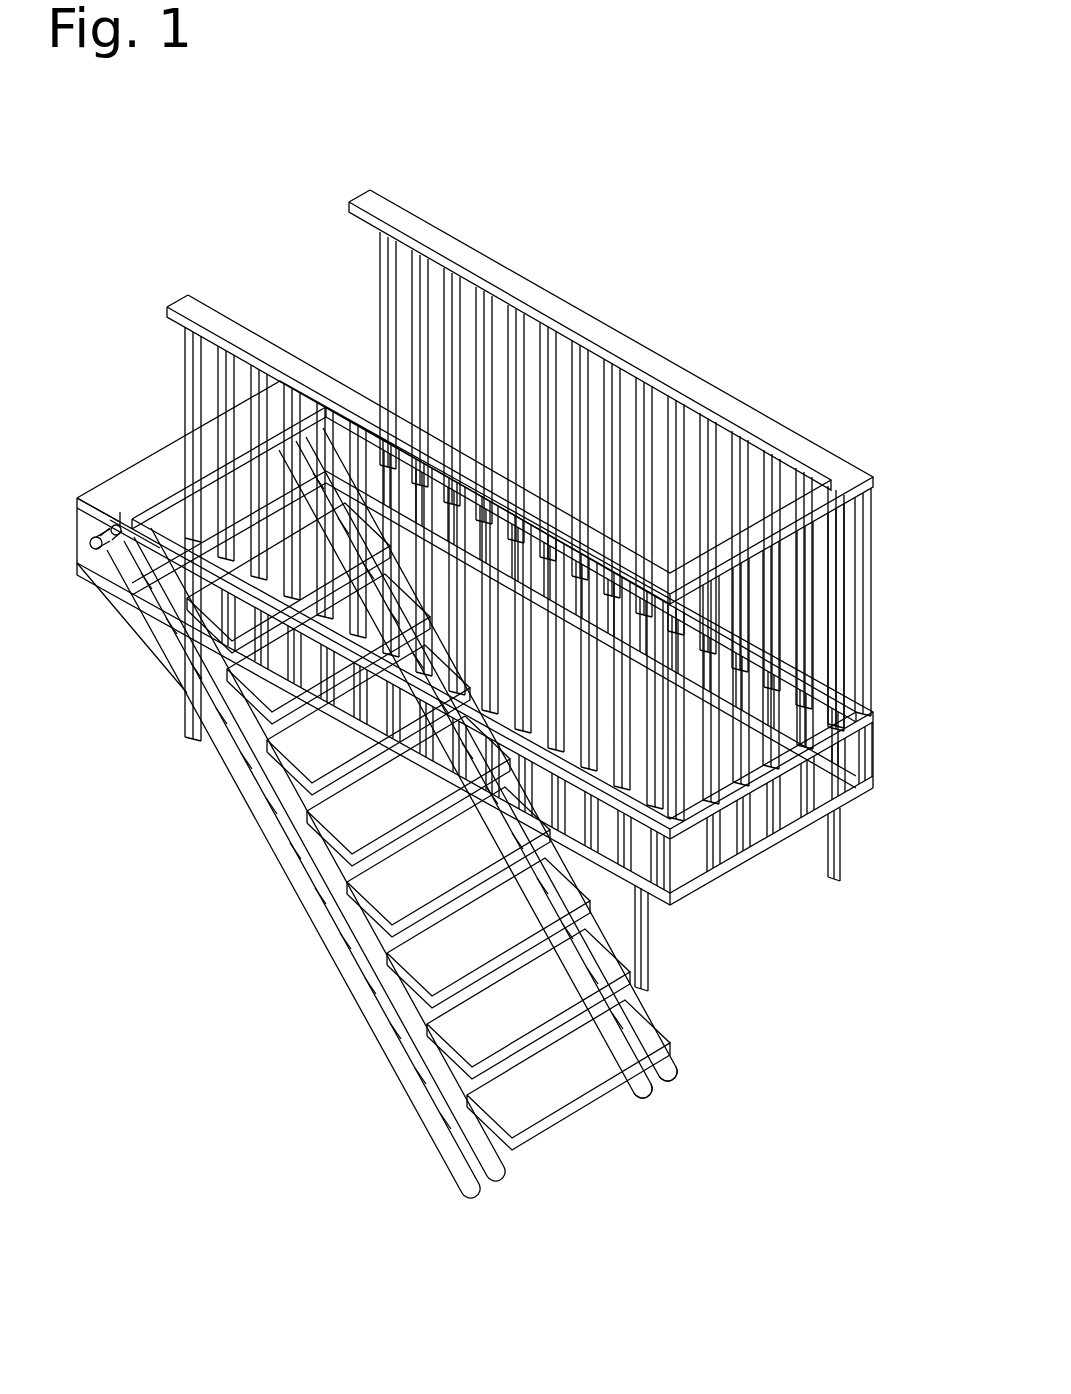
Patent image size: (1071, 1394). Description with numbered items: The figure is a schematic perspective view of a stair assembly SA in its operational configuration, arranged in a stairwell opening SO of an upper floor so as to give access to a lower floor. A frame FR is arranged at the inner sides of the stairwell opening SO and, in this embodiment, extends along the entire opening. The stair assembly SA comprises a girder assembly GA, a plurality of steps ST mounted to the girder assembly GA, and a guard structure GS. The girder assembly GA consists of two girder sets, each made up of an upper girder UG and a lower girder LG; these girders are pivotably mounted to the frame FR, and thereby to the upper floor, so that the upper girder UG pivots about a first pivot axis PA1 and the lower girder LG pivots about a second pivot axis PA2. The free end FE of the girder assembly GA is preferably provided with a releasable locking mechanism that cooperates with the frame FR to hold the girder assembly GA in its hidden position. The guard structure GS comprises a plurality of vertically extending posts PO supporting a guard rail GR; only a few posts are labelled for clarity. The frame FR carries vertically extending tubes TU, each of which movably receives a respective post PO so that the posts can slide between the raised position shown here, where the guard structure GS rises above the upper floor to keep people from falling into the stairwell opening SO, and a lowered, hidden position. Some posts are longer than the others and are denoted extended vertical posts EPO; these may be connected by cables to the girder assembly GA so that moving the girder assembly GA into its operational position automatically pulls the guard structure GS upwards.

The stair assembly SA is at (203, 265).
The guard structure GS is at (551, 286).
The guard rail GR is at (620, 338).
The vertically extending posts PO is at (840, 568).
The first pivot axis PA1 is at (115, 526).
The second pivot axis PA2 is at (96, 549).
The extended vertical posts EPO is at (184, 738).
The frame FR is at (878, 737).
The vertically extending tubes TU is at (800, 805).
The stairwell opening SO is at (736, 888).
The girder assembly GA is at (267, 857).
The upper girder UG is at (500, 1178).
The lower girder LG is at (466, 1198).
The free end FE is at (681, 1081).
The steps ST is at (542, 1105).